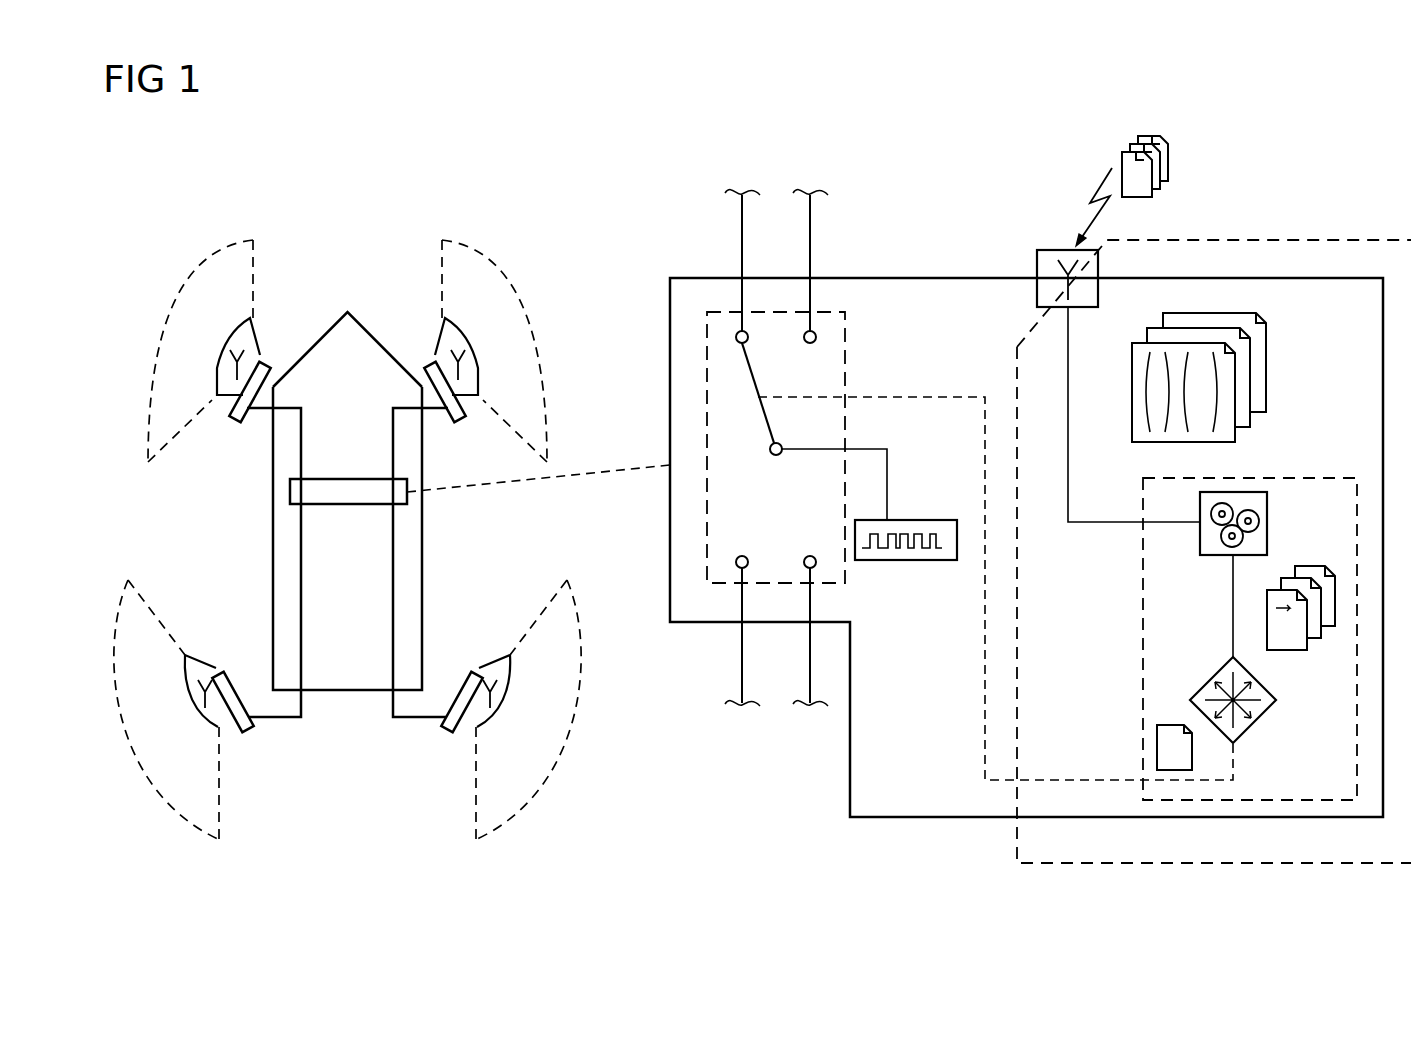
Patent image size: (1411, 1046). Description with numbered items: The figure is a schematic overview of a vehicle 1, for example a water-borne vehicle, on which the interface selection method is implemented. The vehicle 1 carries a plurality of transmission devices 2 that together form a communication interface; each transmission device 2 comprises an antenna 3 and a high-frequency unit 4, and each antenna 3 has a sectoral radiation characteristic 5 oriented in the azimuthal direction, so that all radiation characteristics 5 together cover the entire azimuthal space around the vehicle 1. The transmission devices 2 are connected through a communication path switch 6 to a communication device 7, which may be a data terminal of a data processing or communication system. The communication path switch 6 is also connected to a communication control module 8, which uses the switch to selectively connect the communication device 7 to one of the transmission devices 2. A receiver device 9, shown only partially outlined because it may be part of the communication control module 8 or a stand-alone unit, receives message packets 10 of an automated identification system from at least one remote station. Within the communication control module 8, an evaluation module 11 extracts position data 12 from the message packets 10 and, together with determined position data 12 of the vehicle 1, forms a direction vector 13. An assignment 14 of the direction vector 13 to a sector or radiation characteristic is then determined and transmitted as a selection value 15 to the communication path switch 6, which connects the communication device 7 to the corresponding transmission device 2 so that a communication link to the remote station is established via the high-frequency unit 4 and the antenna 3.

The vehicle 1 is at (358, 348).
The transmission device 2 is at (262, 301).
The antenna 3 is at (217, 385).
The high-frequency unit 4 is at (262, 368).
The sectoral radiation characteristic 5 is at (150, 418).
The communication path switch 6 is at (343, 478).
The communication device 7 is at (922, 520).
The communication control module 8 is at (1283, 240).
The receiver device 9 is at (1068, 250).
The message packets 10 is at (1182, 120).
The evaluation module 11 is at (1333, 478).
The position data 12 is at (1137, 397).
The direction vector 13 is at (1316, 683).
The assignment 14 is at (1211, 680).
The selection value 15 is at (1167, 725).